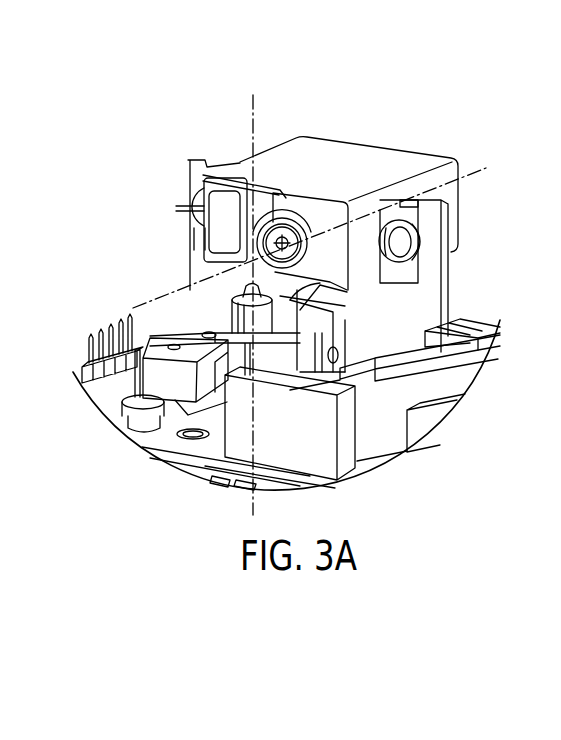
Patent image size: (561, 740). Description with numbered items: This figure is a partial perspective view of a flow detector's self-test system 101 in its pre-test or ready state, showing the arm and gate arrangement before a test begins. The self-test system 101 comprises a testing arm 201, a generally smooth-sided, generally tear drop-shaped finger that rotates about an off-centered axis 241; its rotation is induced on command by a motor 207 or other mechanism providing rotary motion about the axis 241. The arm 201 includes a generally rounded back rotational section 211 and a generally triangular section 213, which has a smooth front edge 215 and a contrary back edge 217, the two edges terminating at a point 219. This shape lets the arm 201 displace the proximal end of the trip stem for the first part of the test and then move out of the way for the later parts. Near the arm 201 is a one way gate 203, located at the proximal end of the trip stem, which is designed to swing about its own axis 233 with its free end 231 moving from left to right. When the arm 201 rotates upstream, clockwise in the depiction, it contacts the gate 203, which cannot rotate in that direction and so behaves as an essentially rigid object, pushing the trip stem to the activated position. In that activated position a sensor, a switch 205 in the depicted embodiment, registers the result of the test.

The self-test system 101 is at (403, 128).
The testing arm 201 is at (323, 280).
The one way gate 203 is at (190, 321).
The switch 205 is at (98, 397).
The motor 207 is at (348, 151).
The back rotational section 211 is at (285, 219).
The triangular section 213 is at (335, 272).
The front edge 215 is at (338, 290).
The back edge 217 is at (326, 274).
The point 219 is at (338, 280).
The free end 231 is at (320, 278).
The axis 233 is at (250, 128).
The off-centered axis 241 is at (167, 291).